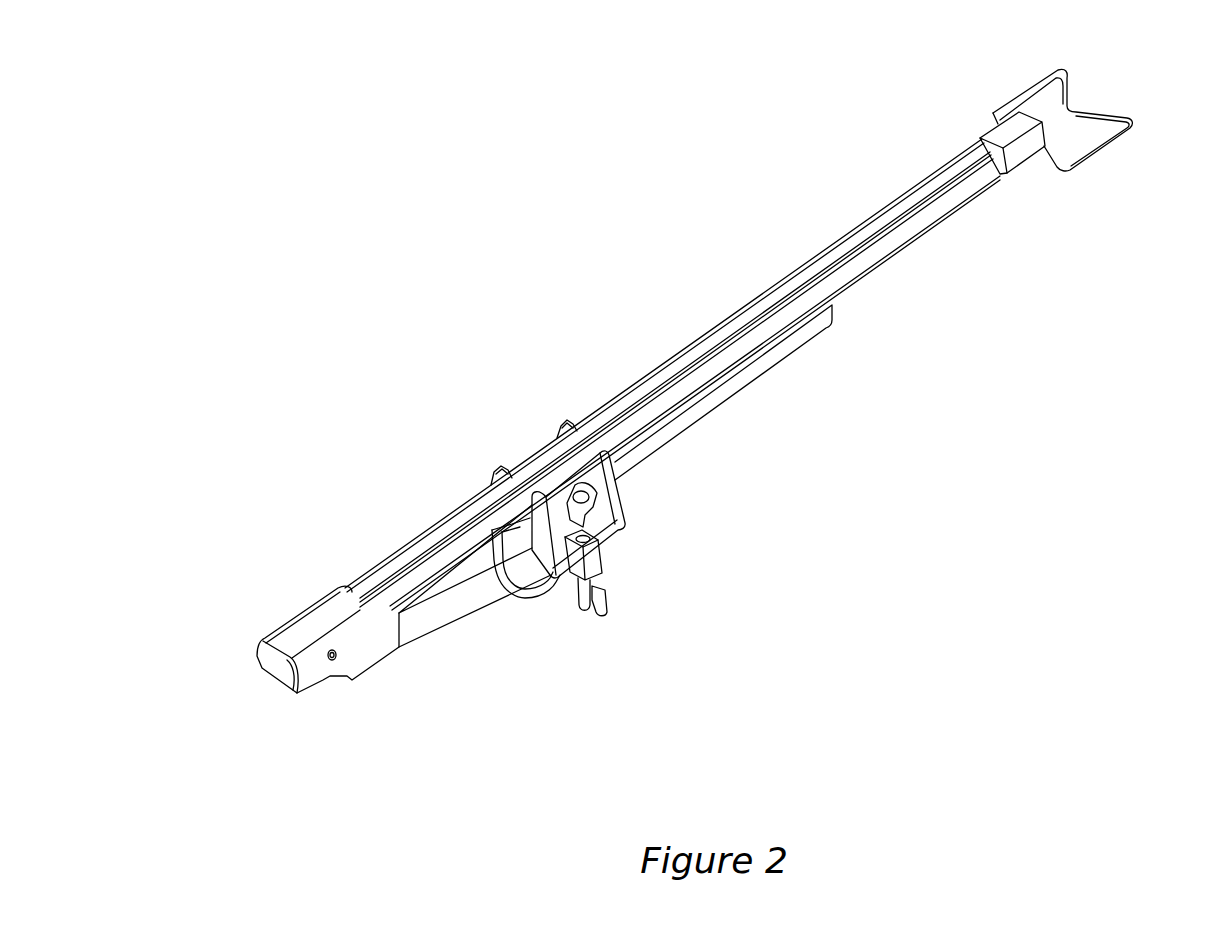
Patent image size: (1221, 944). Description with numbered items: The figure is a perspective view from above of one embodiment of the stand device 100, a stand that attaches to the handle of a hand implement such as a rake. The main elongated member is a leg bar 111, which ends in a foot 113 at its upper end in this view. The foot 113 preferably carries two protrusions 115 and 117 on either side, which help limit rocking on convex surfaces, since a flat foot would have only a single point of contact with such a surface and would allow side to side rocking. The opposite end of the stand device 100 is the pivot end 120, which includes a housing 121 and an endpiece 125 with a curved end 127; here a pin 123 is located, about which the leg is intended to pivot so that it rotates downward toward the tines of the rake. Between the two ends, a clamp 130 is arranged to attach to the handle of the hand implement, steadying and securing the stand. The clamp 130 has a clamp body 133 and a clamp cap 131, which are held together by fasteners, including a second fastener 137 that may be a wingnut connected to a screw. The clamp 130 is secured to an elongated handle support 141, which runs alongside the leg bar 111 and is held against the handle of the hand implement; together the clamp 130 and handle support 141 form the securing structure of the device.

The stand device 100 is at (765, 174).
The leg bar 111 is at (807, 263).
The foot 113 is at (1087, 150).
The protrusion 115 is at (1062, 75).
The protrusion 117 is at (1127, 121).
The pivot end 120 is at (366, 615).
The housing 121 is at (370, 665).
The pin 123 is at (332, 661).
The endpiece 125 is at (300, 613).
The curved end 127 is at (263, 664).
The clamp 130 is at (603, 553).
The clamp cap 131 is at (526, 595).
The clamp body 133 is at (620, 510).
The second fastener 137 is at (597, 607).
The handle support 141 is at (728, 392).